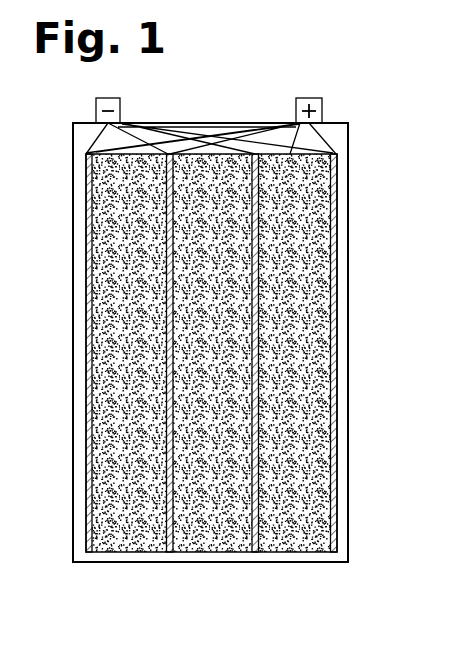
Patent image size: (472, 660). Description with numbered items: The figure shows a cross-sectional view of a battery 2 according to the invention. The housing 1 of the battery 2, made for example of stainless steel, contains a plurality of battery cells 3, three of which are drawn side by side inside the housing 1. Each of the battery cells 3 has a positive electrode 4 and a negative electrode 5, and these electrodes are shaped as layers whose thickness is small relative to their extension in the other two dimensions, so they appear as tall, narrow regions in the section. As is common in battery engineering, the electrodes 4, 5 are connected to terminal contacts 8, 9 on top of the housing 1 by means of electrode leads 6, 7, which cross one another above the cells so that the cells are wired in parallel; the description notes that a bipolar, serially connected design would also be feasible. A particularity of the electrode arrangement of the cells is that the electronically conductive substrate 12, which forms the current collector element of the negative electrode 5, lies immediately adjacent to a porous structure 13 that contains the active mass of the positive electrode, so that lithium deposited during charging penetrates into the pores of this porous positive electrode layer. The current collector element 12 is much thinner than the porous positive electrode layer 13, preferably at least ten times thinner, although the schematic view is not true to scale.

The housing 1 is at (344, 380).
The battery 2 is at (355, 239).
The battery cells 3 is at (268, 554).
The positive electrode 4 is at (91, 463).
The negative electrode 5 is at (334, 465).
The electrode lead 6 is at (258, 127).
The electrode lead 7 is at (143, 127).
The terminal contact 8 is at (322, 105).
The terminal contact 9 is at (96, 108).
The electronically conductive substrate 12 is at (335, 325).
The porous structure 13 is at (313, 520).